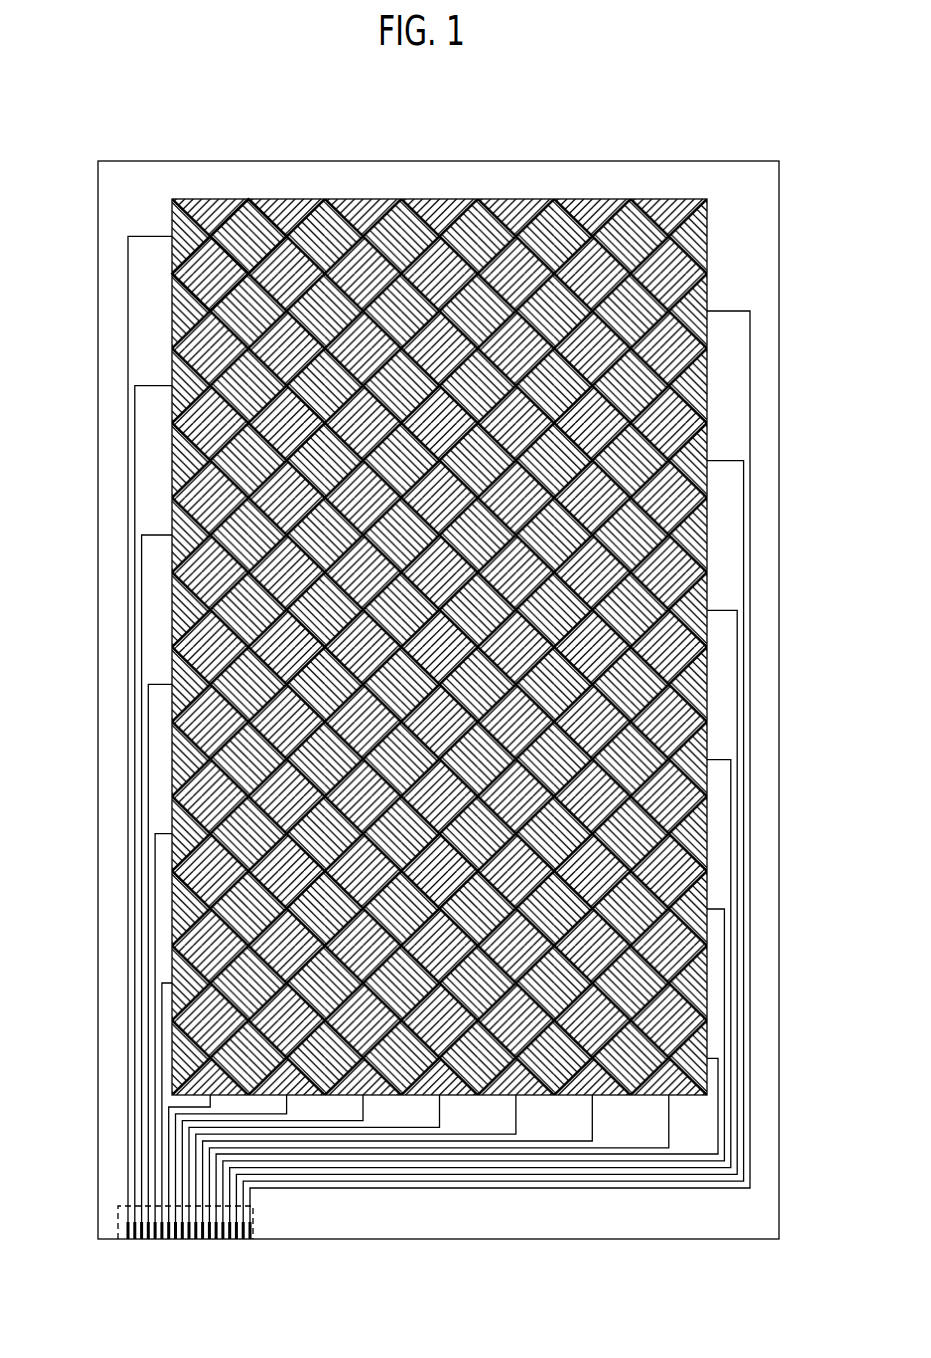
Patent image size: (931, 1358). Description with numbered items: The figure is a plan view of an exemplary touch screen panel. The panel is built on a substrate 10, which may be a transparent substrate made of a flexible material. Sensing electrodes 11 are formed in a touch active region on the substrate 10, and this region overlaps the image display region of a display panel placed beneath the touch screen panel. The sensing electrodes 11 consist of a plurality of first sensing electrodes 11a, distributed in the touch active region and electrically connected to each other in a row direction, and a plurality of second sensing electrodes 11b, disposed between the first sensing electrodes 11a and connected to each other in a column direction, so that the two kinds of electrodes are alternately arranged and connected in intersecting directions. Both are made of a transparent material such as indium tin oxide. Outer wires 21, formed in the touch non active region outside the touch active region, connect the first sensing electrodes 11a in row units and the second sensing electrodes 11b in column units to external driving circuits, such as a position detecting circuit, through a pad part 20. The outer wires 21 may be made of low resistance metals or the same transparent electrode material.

The substrate 10 is at (577, 161).
The sensing electrodes 11 is at (315, 93).
The first sensing electrodes 11a is at (247, 222).
The second sensing electrodes 11b is at (204, 255).
The pad part 20 is at (255, 1224).
The outer wires 21 is at (128, 287).